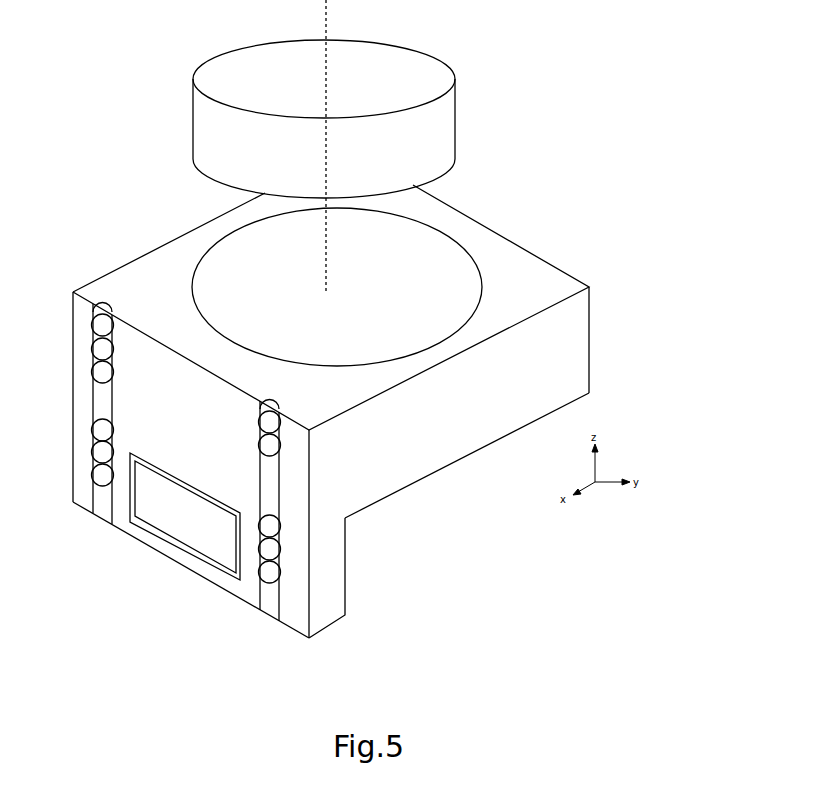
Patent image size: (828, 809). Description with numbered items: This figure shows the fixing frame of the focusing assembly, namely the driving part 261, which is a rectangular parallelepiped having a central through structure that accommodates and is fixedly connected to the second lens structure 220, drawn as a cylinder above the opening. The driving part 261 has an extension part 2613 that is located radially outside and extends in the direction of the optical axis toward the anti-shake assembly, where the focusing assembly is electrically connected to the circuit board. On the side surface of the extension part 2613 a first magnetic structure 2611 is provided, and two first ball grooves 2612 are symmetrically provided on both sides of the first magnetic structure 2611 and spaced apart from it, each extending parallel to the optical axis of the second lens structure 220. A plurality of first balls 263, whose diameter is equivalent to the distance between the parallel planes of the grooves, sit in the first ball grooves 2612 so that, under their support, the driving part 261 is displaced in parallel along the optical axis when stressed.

The second lens structure 220 is at (455, 118).
The driving part 261 is at (608, 335).
The first magnetic structure 2611 is at (175, 530).
The first ball groove 2612 is at (103, 510).
The first ball 263 is at (262, 606).
The extension part 2613 is at (338, 610).